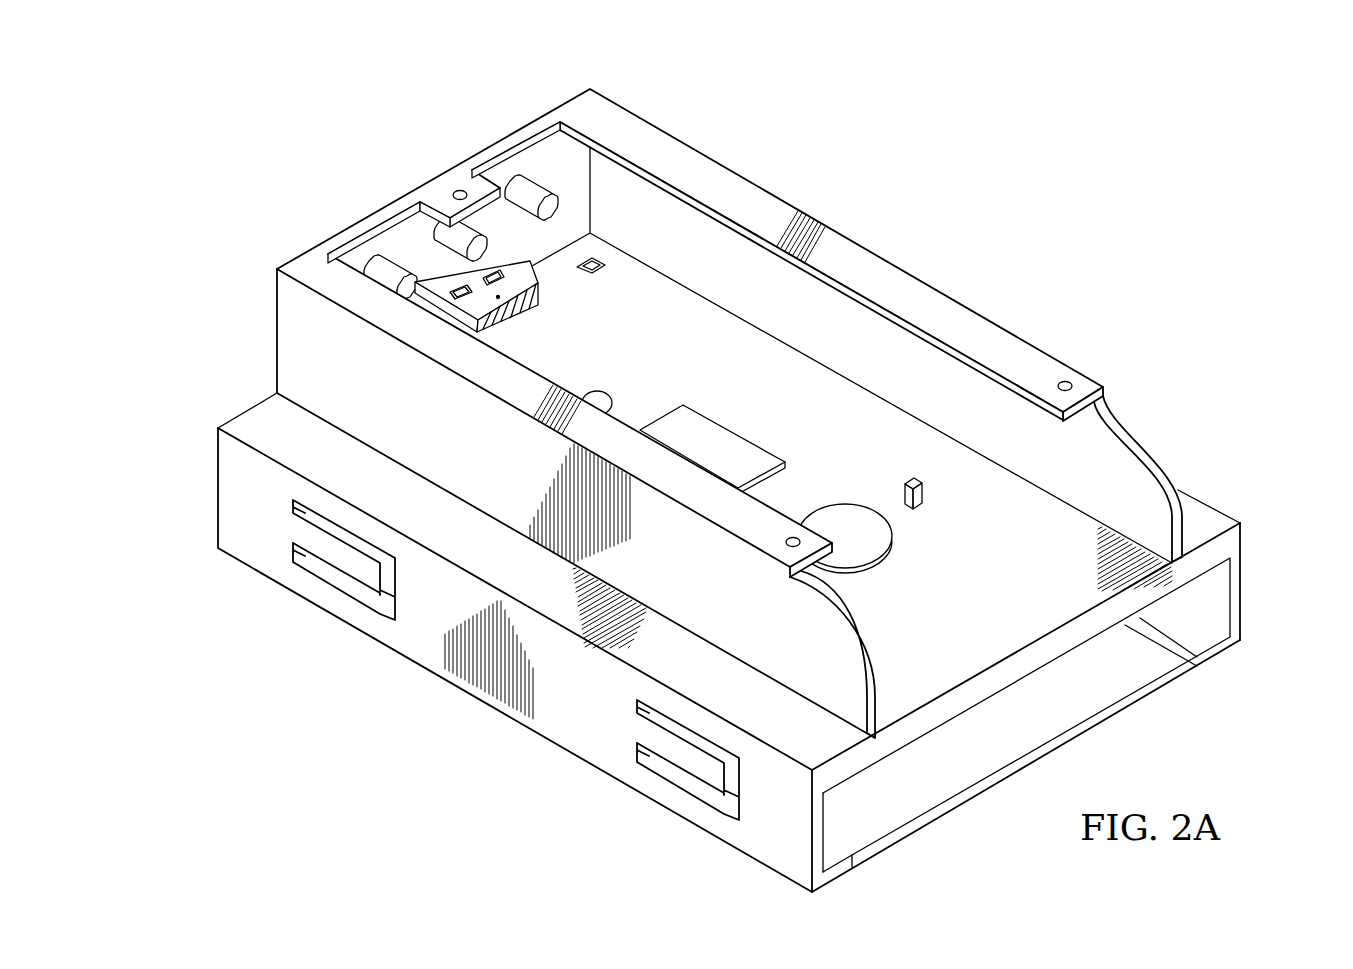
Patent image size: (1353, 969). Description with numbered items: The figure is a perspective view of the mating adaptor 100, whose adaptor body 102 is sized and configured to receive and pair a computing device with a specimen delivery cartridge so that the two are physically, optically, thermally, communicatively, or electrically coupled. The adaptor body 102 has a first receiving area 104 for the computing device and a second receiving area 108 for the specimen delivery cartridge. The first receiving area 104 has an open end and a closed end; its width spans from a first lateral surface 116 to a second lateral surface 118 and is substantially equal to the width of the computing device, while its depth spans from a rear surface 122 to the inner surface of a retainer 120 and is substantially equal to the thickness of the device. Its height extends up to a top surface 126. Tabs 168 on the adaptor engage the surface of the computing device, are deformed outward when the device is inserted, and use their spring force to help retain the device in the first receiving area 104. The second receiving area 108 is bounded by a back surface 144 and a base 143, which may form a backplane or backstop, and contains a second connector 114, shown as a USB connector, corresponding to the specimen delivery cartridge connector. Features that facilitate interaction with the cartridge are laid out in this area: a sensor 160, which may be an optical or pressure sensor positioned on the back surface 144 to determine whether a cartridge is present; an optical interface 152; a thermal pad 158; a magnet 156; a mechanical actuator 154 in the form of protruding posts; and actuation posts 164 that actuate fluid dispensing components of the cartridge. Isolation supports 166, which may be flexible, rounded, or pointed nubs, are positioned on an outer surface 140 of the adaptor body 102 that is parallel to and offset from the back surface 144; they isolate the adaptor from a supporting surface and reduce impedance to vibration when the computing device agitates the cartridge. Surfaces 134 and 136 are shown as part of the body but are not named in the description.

The mating adaptor 100 is at (283, 122).
The adaptor body 102 is at (1236, 436).
The first receiving area 104 is at (947, 763).
The second receiving area 108 is at (1022, 620).
The second connector 114 is at (447, 279).
The first lateral surface 116 is at (826, 815).
The second lateral surface 118 is at (1222, 597).
The retainer 120 is at (832, 855).
The rear surface 122 is at (1010, 690).
The top surface 126 is at (1246, 537).
The rear wall 134 is at (870, 385).
The front wall 136 is at (878, 628).
The outer surface 140 is at (655, 142).
The base 143 is at (522, 147).
The back surface 144 is at (755, 330).
The optical interface 152 is at (602, 390).
The mechanical actuator 154 is at (927, 492).
The magnet 156 is at (836, 515).
The thermal pad 158 is at (736, 440).
The sensor 160 is at (603, 271).
The actuation posts 164 is at (370, 262).
The isolation supports 166 is at (457, 188).
The tabs 168 is at (345, 562).